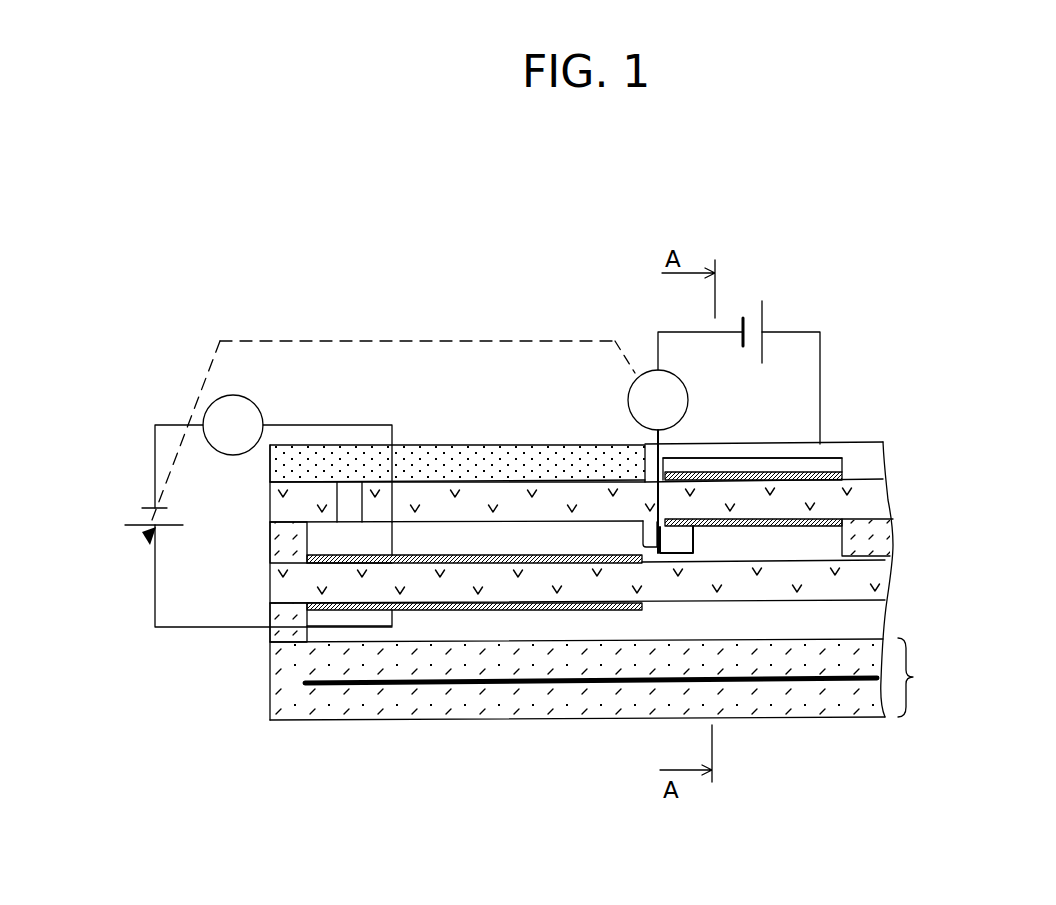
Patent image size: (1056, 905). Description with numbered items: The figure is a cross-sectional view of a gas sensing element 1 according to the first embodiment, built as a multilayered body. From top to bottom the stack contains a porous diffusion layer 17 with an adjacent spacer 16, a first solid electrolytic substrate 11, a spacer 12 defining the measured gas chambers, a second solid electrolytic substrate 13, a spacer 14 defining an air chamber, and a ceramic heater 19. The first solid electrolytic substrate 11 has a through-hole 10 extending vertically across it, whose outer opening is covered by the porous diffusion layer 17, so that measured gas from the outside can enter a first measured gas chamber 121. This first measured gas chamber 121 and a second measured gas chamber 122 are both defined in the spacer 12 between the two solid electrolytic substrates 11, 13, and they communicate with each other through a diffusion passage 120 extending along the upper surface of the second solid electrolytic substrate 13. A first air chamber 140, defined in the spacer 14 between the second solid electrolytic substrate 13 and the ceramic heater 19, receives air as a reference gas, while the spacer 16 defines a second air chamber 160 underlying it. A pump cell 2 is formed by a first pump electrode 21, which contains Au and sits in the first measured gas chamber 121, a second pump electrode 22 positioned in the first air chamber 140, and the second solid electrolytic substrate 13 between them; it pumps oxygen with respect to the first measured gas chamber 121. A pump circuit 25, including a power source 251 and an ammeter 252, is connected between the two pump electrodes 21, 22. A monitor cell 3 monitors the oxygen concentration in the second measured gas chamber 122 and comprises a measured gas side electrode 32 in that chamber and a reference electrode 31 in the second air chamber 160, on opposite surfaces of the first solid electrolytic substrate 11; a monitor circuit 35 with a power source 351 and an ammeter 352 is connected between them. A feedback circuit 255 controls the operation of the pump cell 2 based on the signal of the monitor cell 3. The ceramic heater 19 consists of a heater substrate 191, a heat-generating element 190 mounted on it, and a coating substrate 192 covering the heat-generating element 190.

The gas sensing element 1 is at (882, 233).
The pump cell 2 is at (452, 538).
The monitor cell 3 is at (783, 463).
The through-hole 10 is at (347, 505).
The first solid electrolytic substrate 11 is at (270, 505).
The spacer 12 is at (275, 545).
The second solid electrolytic substrate 13 is at (275, 590).
The spacer 14 is at (275, 637).
The spacer 16 is at (867, 448).
The porous diffusion layer 17 is at (570, 462).
The ceramic heater 19 is at (621, 679).
The first pump electrode 21 is at (517, 555).
The second pump electrode 22 is at (583, 611).
The pump circuit 25 is at (153, 607).
The reference electrode 31 is at (800, 473).
The measured gas side electrode 32 is at (763, 522).
The monitor circuit 35 is at (822, 373).
The diffusion passage 120 is at (652, 557).
The first measured gas chamber 121 is at (415, 542).
The second measured gas chamber 122 is at (820, 537).
The first air chamber 140 is at (843, 617).
The second air chamber 160 is at (863, 470).
The heat-generating element 190 is at (448, 690).
The heater substrate 191 is at (362, 720).
The coating substrate 192 is at (503, 657).
The power source 251 is at (142, 528).
The ammeter 252 is at (230, 397).
The feedback circuit 255 is at (283, 340).
The power source 351 is at (763, 300).
The ammeter 352 is at (652, 372).